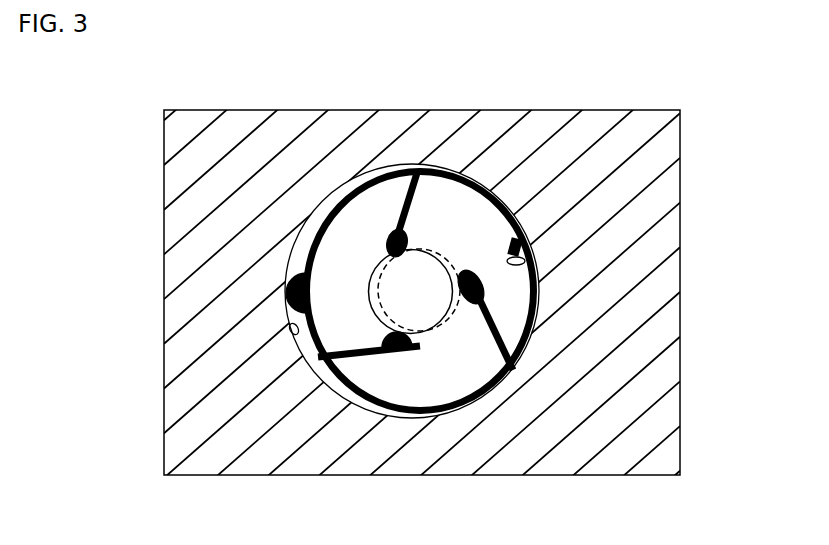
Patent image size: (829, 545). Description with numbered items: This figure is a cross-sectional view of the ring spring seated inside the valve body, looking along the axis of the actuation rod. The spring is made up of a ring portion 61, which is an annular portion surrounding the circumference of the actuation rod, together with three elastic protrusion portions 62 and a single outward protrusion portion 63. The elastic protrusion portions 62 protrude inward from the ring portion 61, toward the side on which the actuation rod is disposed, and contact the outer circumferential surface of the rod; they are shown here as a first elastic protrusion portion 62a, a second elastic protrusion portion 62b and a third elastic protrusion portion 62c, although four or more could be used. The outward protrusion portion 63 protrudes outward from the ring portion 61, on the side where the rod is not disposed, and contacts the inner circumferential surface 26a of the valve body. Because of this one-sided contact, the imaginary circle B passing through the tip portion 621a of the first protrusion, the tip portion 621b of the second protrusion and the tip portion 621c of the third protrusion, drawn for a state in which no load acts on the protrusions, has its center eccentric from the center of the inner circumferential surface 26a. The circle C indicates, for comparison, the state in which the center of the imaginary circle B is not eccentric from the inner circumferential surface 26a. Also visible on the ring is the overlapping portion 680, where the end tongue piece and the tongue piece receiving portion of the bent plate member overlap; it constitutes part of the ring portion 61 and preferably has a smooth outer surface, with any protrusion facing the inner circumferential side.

The inner circumferential surface 26a is at (291, 333).
The ring portion 61 is at (317, 237).
The elastic protrusion portions 62 is at (553, 286).
The first elastic protrusion portion 62a is at (524, 147).
The second elastic protrusion portion 62b is at (381, 434).
The third elastic protrusion portion 62c is at (629, 399).
The tip portion 621a is at (403, 236).
The tip portion 621b is at (367, 353).
The tip portion 621c is at (472, 313).
The outward protrusion portion 63 is at (284, 290).
The overlapping portion 680 is at (524, 261).
The imaginary circle B is at (442, 257).
The circle C is at (376, 315).